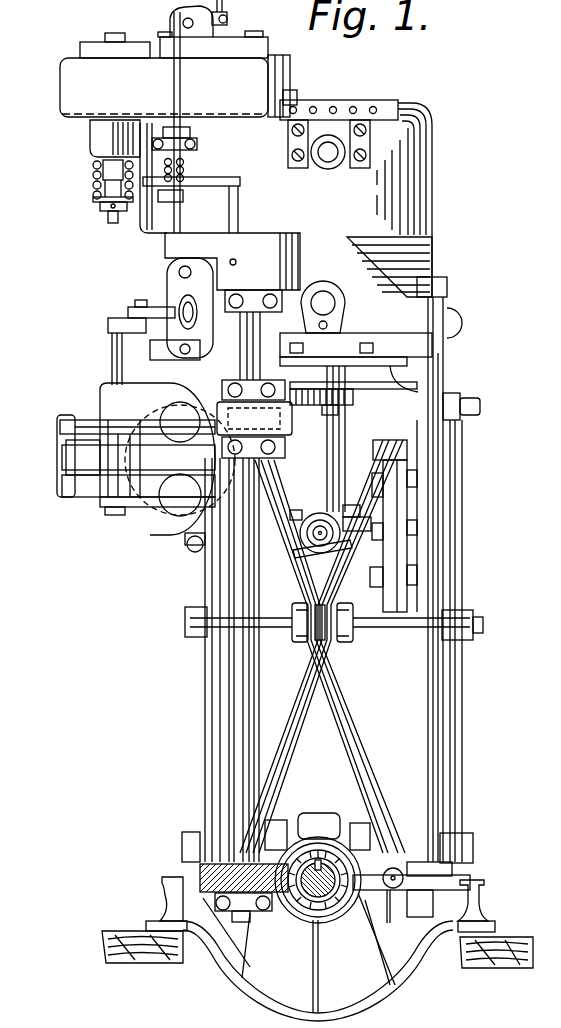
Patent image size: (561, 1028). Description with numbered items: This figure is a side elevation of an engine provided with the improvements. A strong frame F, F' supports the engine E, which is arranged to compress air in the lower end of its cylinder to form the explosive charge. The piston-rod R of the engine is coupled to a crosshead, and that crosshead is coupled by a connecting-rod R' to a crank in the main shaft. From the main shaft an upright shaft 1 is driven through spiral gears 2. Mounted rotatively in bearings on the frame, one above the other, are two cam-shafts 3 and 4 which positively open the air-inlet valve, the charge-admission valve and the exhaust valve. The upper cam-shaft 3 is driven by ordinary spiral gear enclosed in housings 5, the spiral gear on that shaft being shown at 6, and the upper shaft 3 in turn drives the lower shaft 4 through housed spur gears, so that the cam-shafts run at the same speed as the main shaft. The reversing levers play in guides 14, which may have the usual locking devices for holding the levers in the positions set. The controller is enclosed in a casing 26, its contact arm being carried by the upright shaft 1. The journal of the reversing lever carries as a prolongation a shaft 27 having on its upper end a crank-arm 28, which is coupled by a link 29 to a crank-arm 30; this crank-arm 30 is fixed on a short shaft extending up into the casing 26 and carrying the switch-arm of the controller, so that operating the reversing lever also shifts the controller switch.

The upright shaft 1 is at (280, 600).
The spiral gears 2 is at (200, 866).
The upper cam-shaft 3 is at (118, 478).
The lower cam-shaft 4 is at (173, 492).
The housings 5 is at (306, 445).
The spiral gear 6 is at (324, 903).
The guides 14 is at (62, 453).
The casing 26 is at (221, 233).
The shaft 27 is at (112, 360).
The crank-arm 28 is at (108, 325).
The link 29 is at (158, 308).
The crank-arm 30 is at (170, 296).
The engine E is at (371, 233).
The frame F is at (211, 587).
The frame F' is at (441, 586).
The piston-rod R is at (354, 462).
The connecting-rod R' is at (330, 656).